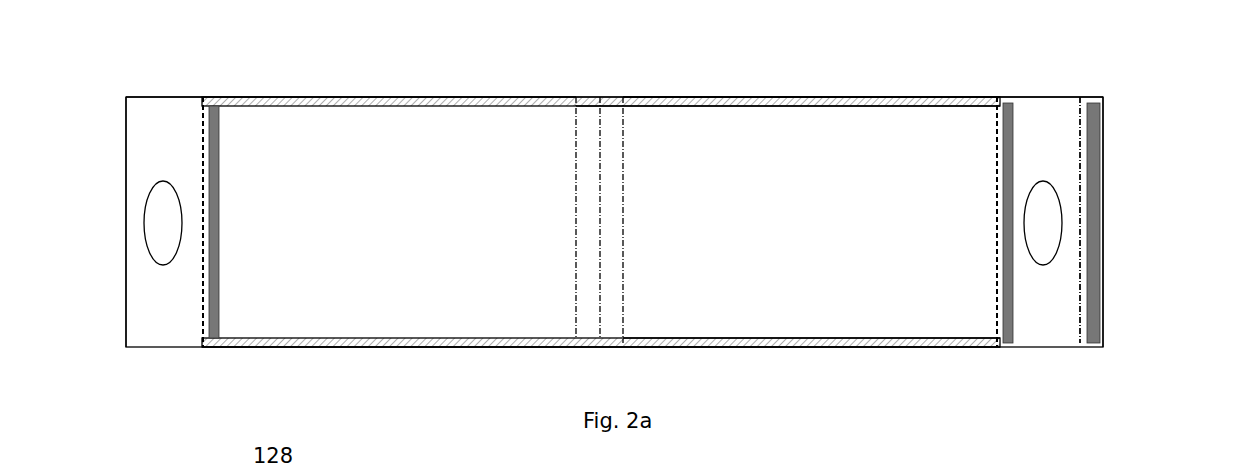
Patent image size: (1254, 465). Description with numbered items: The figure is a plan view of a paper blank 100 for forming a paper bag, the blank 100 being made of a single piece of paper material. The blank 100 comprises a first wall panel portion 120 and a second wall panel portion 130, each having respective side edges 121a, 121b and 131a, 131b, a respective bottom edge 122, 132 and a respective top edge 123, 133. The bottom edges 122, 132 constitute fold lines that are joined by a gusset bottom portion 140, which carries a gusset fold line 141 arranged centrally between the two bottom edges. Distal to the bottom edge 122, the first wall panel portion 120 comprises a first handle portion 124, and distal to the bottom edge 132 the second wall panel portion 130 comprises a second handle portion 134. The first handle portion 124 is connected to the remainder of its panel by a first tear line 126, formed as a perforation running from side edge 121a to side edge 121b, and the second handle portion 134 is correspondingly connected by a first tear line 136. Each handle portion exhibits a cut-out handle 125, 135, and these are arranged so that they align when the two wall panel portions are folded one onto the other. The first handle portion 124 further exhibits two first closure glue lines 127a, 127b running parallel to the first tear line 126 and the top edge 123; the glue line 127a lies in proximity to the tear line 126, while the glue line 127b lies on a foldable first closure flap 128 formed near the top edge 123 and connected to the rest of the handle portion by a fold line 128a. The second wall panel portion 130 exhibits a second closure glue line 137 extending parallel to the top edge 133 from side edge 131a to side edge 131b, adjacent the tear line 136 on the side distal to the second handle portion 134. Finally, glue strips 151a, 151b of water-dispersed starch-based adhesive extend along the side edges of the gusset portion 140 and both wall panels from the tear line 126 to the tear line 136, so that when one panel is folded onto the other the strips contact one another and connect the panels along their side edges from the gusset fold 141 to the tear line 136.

The paper blank 100 is at (295, 43).
The first wall panel portion 120 is at (853, 95).
The side edge of first wall panel portion 121a is at (955, 97).
The side edge of first wall panel portion 121b is at (865, 348).
The bottom edge of first wall panel portion 122 is at (623, 110).
The top edge of first wall panel portion 123 is at (1103, 158).
The first handle portion 124 is at (1058, 95).
The cut-out handle 125 is at (1056, 226).
The first tear line 126 is at (997, 115).
The first closure glue line 127a is at (1008, 330).
The first closure glue line 127b is at (1093, 308).
The first closure flap 128 is at (1100, 97).
The fold line 128a is at (1081, 330).
The second wall panel portion 130 is at (415, 96).
The side edge of second wall panel portion 131a is at (312, 97).
The side edge of second wall panel portion 131b is at (325, 348).
The bottom edge of second wall panel portion 132 is at (577, 322).
The top edge of second wall panel portion 133 is at (126, 160).
The second handle portion 134 is at (176, 90).
The cut-out handle 135 is at (153, 203).
The first tear line 136 is at (205, 104).
The second closure glue line 137 is at (214, 325).
The gusset bottom portion 140 is at (617, 96).
The gusset fold line 141 is at (600, 322).
The glue strip 151a is at (780, 97).
The glue strip 151b is at (457, 348).